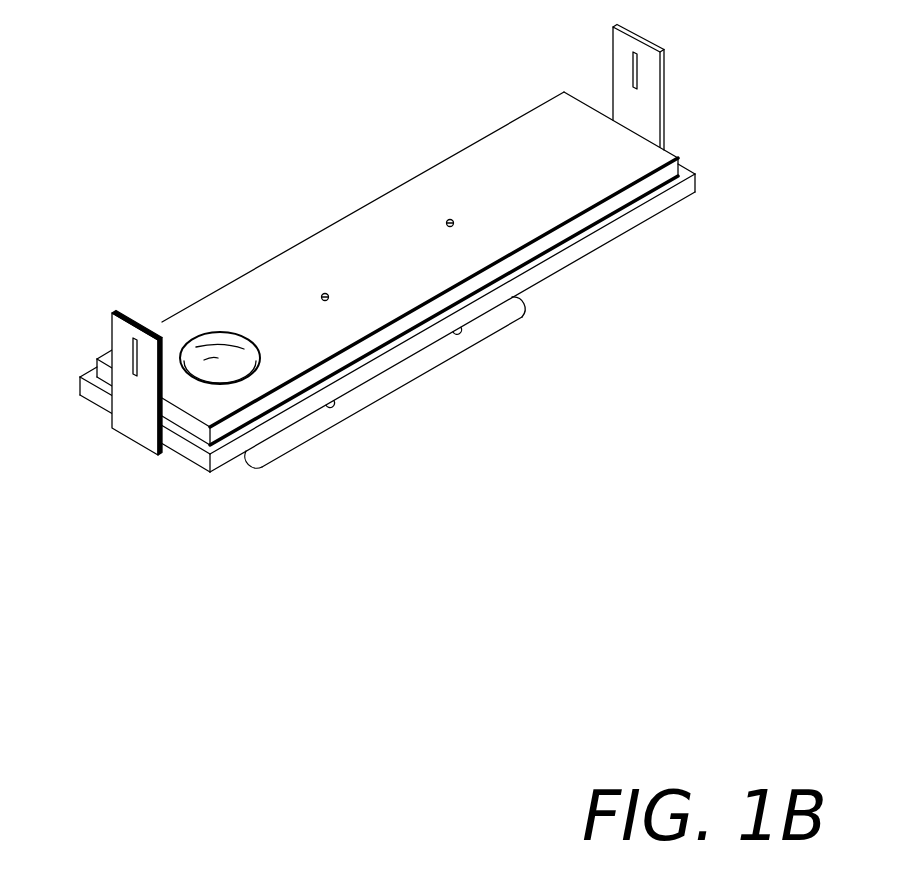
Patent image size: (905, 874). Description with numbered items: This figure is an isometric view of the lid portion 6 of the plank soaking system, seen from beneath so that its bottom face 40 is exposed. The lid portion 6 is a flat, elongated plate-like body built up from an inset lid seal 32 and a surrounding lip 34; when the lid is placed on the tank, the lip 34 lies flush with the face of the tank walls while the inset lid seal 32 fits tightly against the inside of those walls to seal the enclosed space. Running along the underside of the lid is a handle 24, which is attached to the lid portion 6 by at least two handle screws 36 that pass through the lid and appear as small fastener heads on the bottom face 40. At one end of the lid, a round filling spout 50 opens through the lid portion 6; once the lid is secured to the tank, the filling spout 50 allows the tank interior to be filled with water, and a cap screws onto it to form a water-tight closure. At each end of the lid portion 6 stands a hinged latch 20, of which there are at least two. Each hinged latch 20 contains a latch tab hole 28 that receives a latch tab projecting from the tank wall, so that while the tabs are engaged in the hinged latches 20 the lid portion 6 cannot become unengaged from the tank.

The lid portion 6 is at (200, 178).
The hinged latch 20 is at (113, 315).
The handle 24 is at (381, 393).
The latch tab hole 28 is at (113, 331).
The inset lid seal 32 is at (678, 157).
The lip 34 is at (686, 170).
The handle screw 36 is at (450, 220).
The bottom face 40 is at (393, 286).
The filling spout 50 is at (217, 336).